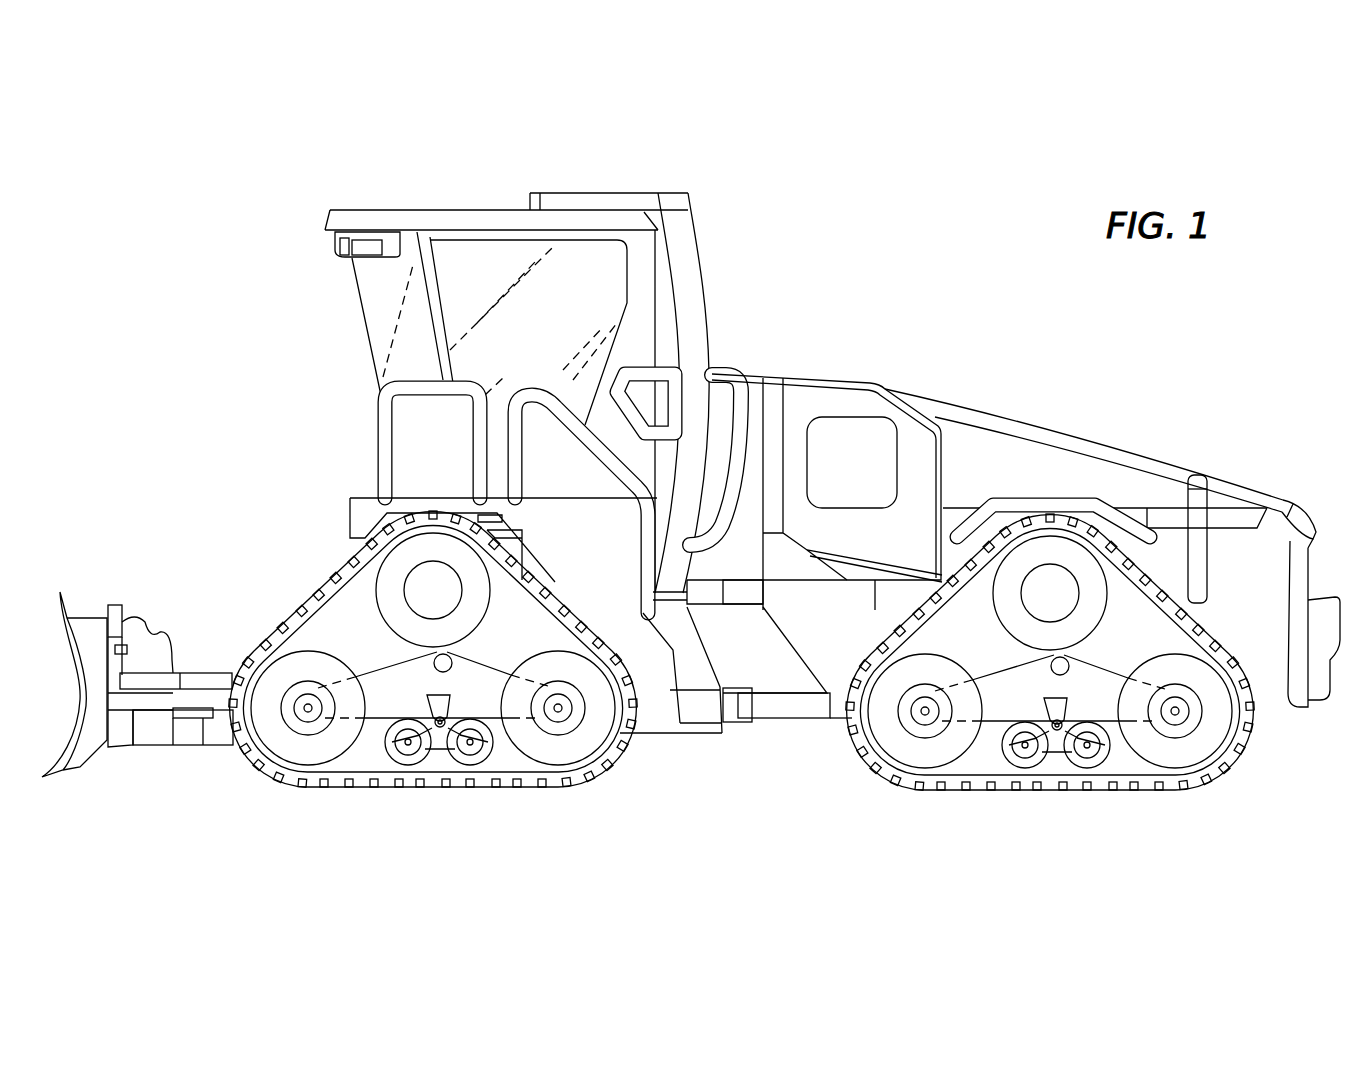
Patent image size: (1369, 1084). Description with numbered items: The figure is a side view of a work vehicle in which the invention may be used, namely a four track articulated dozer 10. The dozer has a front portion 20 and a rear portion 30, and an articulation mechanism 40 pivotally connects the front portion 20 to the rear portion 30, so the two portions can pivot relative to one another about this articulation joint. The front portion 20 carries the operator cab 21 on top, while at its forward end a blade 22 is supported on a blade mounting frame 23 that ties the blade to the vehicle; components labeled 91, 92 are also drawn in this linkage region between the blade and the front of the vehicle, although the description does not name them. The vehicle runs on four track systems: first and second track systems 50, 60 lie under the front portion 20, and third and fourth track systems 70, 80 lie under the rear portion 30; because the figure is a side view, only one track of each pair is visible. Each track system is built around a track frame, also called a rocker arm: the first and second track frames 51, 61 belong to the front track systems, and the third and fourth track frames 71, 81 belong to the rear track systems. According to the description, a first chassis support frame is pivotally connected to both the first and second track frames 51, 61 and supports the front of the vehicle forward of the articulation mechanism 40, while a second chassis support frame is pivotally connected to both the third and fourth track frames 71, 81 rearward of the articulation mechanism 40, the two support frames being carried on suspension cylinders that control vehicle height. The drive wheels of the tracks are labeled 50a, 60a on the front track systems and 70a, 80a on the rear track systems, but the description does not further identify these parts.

The four track articulated dozer 10 is at (908, 204).
The front portion 20 is at (306, 318).
The operator cab 21 is at (478, 260).
The blade 22 is at (90, 627).
The blade mounting frame 23 is at (203, 733).
The rear portion 30 is at (1076, 380).
The articulation mechanism 40 is at (781, 752).
The first track system 50 is at (429, 695).
The second track system 60 is at (467, 823).
The front drive wheel 50a is at (356, 590).
The front drive wheel 60a is at (390, 580).
The first track frame 51 is at (432, 671).
The second track frame 61 is at (393, 680).
The third track system 70 is at (1050, 673).
The fourth track system 80 is at (1080, 823).
The rear drive wheel 70a is at (1037, 558).
The rear drive wheel 80a is at (1075, 557).
The third track frame 71 is at (1050, 675).
The fourth track frame 81 is at (1010, 683).
The blade lift linkage / upper arm 91 is at (199, 632).
The blade lift linkage / upper arm 92 is at (210, 677).